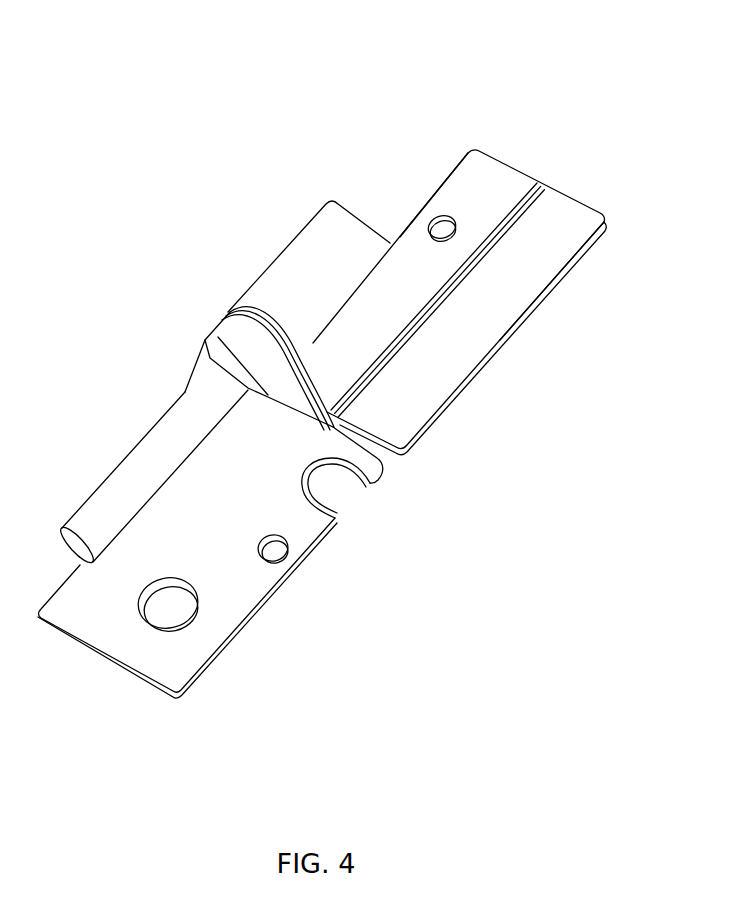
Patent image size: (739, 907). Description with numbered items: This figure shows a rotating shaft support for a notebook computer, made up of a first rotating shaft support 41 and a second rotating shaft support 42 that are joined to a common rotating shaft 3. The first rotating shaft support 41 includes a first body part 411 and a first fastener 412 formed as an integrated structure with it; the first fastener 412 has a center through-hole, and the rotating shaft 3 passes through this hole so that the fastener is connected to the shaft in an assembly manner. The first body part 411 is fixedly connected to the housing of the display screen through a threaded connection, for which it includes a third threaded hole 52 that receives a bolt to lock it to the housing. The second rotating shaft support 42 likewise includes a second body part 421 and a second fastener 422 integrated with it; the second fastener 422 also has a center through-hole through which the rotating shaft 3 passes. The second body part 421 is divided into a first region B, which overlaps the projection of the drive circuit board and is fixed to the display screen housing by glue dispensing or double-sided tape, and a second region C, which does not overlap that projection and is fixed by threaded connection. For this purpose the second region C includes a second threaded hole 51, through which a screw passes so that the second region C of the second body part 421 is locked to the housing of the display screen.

The rotating shaft 3 is at (308, 263).
The first rotating shaft support 41 is at (172, 202).
The first body part 411 is at (187, 528).
The first fastener 412 is at (232, 315).
The second rotating shaft support 42 is at (245, 173).
The second body part 421 is at (523, 177).
The second fastener 422 is at (259, 313).
The second threaded hole 51 is at (444, 222).
The third threaded hole 52 is at (177, 607).
The first region B is at (532, 275).
The second region C is at (413, 250).